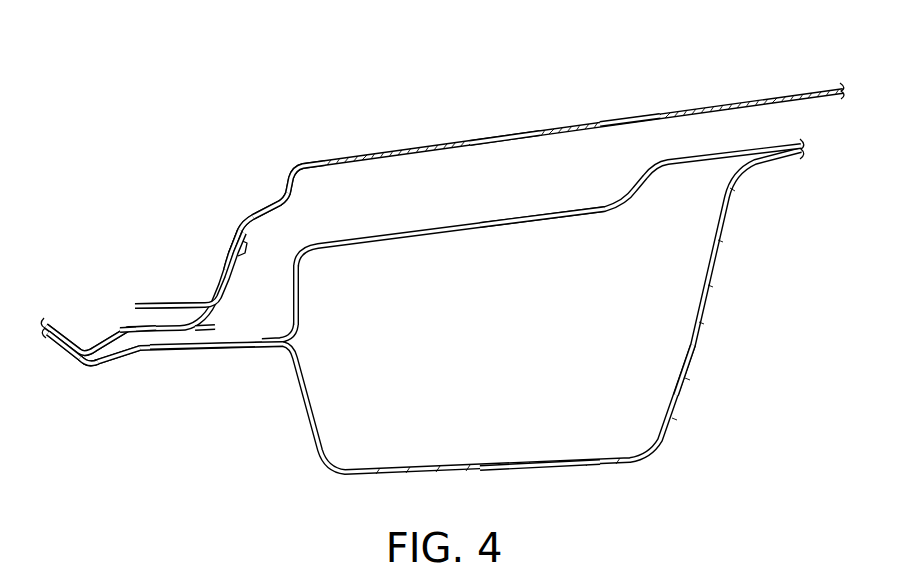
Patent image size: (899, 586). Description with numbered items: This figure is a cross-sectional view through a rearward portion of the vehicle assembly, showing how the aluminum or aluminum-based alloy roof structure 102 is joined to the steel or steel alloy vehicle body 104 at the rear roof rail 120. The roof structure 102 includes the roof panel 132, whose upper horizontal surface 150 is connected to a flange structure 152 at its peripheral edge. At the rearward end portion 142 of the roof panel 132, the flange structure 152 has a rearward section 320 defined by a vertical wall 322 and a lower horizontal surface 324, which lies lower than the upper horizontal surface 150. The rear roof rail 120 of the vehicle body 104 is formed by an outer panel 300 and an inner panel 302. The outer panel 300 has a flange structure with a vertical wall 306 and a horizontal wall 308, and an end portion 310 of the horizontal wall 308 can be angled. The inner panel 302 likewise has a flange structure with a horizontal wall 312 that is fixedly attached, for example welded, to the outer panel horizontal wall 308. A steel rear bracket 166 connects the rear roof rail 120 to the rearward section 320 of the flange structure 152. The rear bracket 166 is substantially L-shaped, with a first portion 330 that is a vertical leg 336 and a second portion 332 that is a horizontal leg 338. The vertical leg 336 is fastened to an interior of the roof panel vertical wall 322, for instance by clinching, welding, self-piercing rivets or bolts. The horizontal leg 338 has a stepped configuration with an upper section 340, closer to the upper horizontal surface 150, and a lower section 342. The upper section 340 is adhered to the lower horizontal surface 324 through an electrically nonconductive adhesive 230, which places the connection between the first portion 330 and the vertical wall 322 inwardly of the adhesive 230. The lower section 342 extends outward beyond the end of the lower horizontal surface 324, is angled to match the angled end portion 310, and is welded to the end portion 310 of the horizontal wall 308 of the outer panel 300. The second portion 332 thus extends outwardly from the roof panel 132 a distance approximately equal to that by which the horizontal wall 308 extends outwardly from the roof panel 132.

The roof structure 102 is at (673, 74).
The roof panel 132 is at (623, 112).
The upper horizontal surface 150 is at (500, 138).
The rearward end portion 142 is at (328, 163).
The flange structure 152 is at (268, 180).
The rearward section 320 is at (244, 195).
The vertical wall 322 is at (236, 225).
The vertical leg 336 is at (242, 250).
The lower horizontal surface 324 is at (183, 303).
The electrically nonconductive adhesive 230 is at (167, 318).
The second portion 332 is at (104, 313).
The vehicle body 104 is at (787, 368).
The end portion 310 is at (68, 363).
The lower section 342 is at (90, 361).
The horizontal leg 338 is at (130, 334).
The upper section 340 is at (143, 334).
The horizontal wall 308 is at (180, 350).
The horizontal wall 312 is at (250, 353).
The rear bracket 166 is at (217, 326).
The vertical wall 306 is at (300, 288).
The first portion 330 is at (255, 292).
The outer panel 300 is at (567, 214).
The inner panel 302 is at (538, 463).
The rear roof rail 120 is at (745, 447).